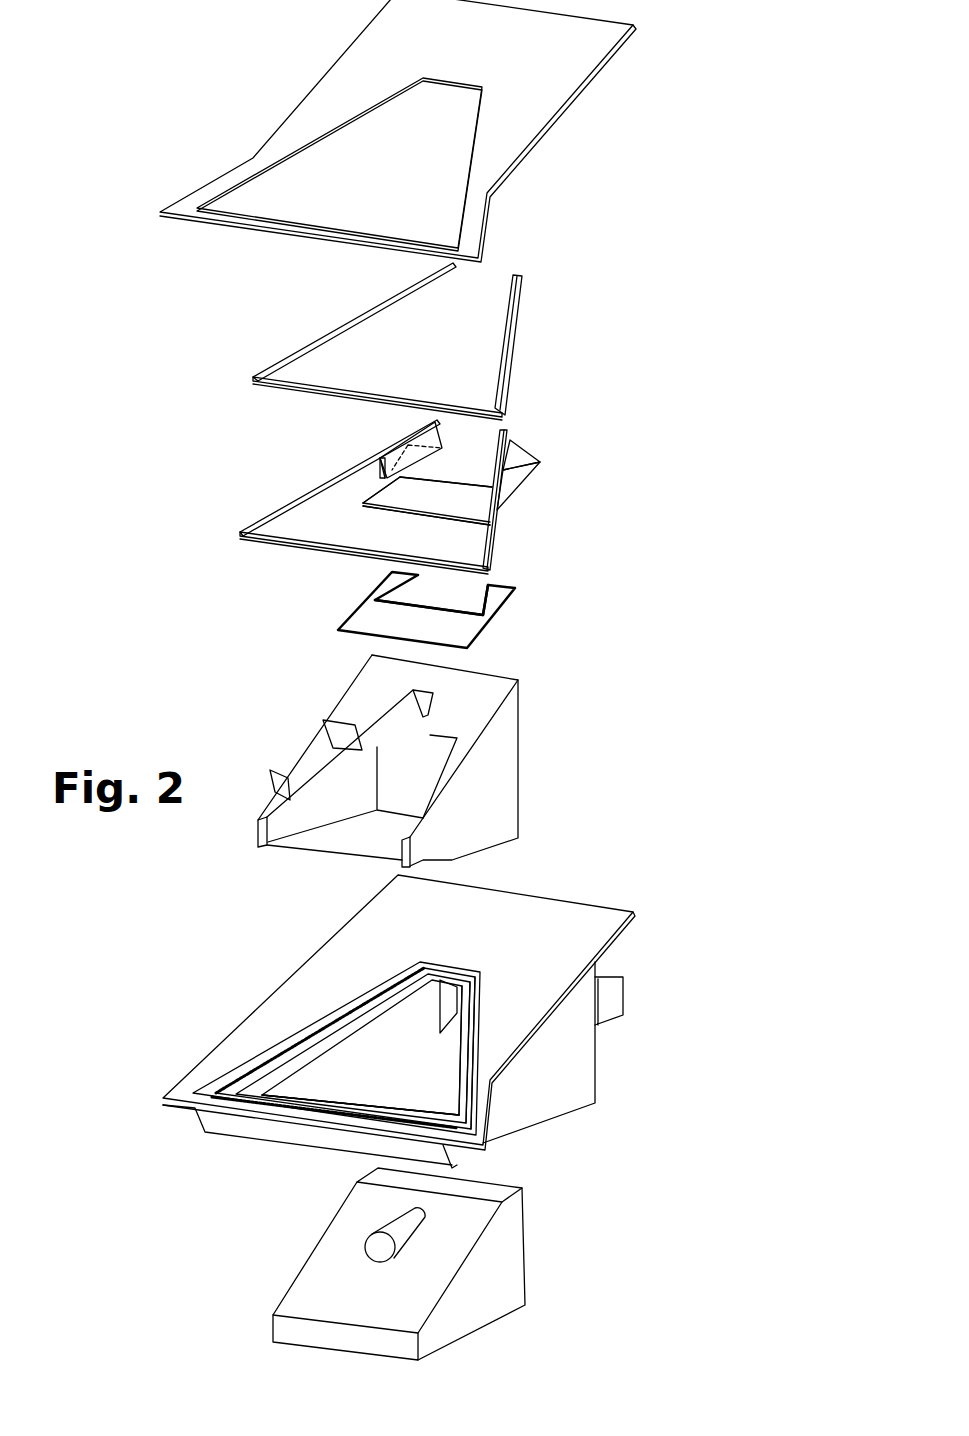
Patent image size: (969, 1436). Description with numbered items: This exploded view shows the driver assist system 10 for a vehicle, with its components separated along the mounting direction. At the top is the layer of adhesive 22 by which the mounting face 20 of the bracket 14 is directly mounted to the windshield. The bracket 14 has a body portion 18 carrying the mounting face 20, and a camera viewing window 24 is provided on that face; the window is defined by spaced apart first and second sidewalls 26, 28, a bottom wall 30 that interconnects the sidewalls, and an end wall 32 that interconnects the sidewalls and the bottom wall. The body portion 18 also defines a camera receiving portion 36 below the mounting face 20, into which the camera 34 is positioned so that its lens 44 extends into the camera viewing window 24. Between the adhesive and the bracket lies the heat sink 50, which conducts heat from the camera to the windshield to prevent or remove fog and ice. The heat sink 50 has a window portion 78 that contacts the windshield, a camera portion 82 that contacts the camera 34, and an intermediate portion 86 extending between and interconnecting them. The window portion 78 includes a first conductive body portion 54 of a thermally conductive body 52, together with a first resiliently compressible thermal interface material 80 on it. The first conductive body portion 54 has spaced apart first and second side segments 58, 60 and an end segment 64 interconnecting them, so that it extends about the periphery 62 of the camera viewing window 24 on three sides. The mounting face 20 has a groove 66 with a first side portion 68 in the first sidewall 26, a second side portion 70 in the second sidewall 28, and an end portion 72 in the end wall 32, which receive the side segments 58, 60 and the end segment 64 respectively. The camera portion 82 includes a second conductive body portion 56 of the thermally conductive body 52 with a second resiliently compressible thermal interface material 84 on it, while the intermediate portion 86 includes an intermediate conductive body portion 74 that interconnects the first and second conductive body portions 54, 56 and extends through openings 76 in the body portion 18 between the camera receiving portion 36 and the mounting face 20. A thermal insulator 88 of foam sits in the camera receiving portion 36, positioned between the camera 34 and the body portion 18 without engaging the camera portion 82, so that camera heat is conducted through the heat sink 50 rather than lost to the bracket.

The driver assist system 10 is at (128, 185).
The bracket 14 is at (398, 890).
The body portion 18 is at (575, 935).
The mounting face 20 is at (370, 920).
The layer of adhesive 22 is at (525, 103).
The camera viewing window 24 is at (430, 1028).
The first sidewall 26 is at (243, 1060).
The second sidewall 28 is at (463, 1088).
The bottom wall 30 is at (365, 1088).
The end wall 32 is at (260, 1127).
The camera 34 is at (369, 1264).
The camera receiving portion 36 is at (578, 1020).
The lens 44 is at (375, 1240).
The heat sink 50 is at (615, 397).
The thermally conductive body 52 is at (490, 522).
The first conductive body portion 54 is at (507, 510).
The second conductive body portion 56 is at (433, 505).
The first side segment 58 is at (288, 500).
The second side segment 60 is at (488, 543).
The periphery 62 is at (457, 1048).
The end segment 64 is at (282, 535).
The groove 66 is at (463, 1113).
The first side portion 68 is at (257, 1083).
The second side portion 70 is at (457, 1038).
The end portion 72 is at (383, 1122).
The intermediate conductive body portion 74 is at (435, 425).
The openings 76 is at (373, 995).
The window portion 78 is at (225, 380).
The first resiliently compressible thermal interface material 80 is at (508, 352).
The camera portion 82 is at (515, 581).
The second resiliently compressible thermal interface material 84 is at (488, 630).
The intermediate portion 86 is at (360, 467).
The thermal insulator 88 is at (453, 760).